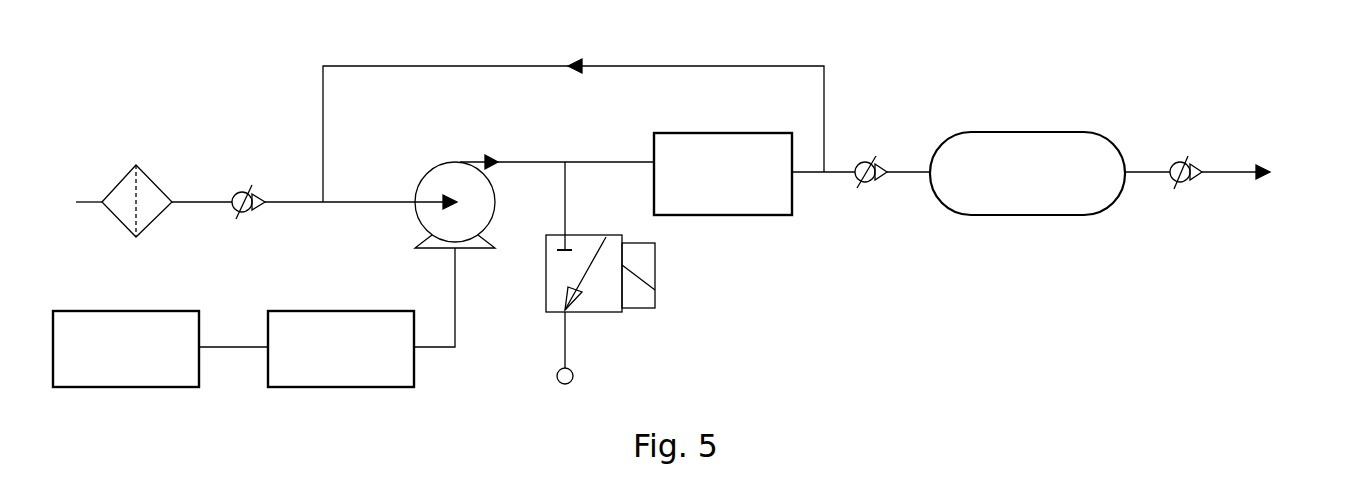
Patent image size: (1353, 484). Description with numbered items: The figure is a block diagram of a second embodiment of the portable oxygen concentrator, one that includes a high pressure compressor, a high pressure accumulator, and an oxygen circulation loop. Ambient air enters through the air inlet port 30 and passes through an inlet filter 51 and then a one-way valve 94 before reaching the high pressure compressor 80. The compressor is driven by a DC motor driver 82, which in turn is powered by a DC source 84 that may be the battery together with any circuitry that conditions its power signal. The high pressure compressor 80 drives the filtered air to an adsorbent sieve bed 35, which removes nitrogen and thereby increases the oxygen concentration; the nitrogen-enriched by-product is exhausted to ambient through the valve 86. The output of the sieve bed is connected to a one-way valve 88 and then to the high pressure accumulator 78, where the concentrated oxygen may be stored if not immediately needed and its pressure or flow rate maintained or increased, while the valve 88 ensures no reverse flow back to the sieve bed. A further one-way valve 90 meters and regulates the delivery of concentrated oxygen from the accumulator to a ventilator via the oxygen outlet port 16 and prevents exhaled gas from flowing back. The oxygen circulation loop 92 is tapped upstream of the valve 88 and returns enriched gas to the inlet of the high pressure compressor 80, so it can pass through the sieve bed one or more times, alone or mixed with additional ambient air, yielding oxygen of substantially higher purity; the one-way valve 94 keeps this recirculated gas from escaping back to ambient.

The air inlet port 30 is at (72, 198).
The inlet filter 51 is at (143, 178).
The one-way valve 94 is at (240, 186).
The high pressure compressor 80 is at (428, 184).
The DC motor driver 82 is at (377, 311).
The DC source 84 is at (167, 311).
The valve 86 is at (597, 313).
The adsorbent sieve bed 35 is at (724, 133).
The oxygen circulation loop 92 is at (826, 80).
The valve 88 is at (862, 158).
The high pressure accumulator 78 is at (1034, 132).
The valve 90 is at (1173, 158).
The oxygen outlet port 16 is at (1230, 176).